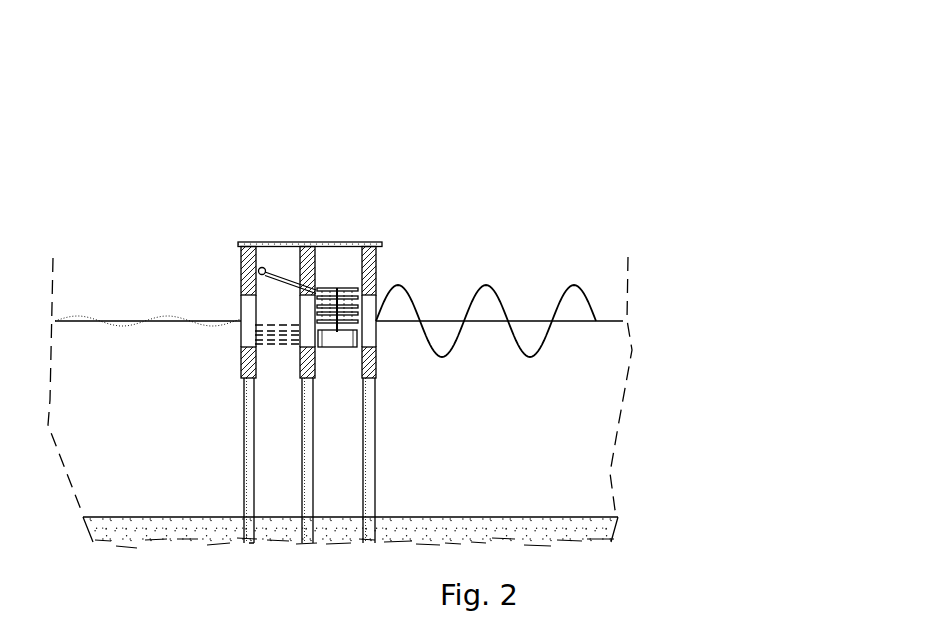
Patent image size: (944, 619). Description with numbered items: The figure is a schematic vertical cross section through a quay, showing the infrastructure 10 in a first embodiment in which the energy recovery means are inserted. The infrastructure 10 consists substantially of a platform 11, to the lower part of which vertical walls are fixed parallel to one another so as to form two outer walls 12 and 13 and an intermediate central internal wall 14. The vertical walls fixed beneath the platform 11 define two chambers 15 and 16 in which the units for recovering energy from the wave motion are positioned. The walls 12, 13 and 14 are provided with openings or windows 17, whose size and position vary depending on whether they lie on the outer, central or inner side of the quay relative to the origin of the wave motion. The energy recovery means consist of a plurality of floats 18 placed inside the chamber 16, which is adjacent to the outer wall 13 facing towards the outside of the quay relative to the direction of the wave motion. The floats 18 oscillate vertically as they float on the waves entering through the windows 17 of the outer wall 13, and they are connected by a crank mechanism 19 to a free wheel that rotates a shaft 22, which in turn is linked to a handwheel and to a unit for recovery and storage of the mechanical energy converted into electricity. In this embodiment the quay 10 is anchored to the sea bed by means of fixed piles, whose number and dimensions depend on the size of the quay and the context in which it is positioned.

The infrastructure 10 is at (157, 127).
The platform 11 is at (288, 243).
The outer wall 12 is at (241, 268).
The outer wall 13 is at (376, 263).
The intermediate central internal wall 14 is at (352, 330).
The chamber 15 is at (277, 305).
The chamber 16 is at (341, 262).
The openings or windows 17 is at (241, 307).
The floats 18 is at (373, 372).
The crank mechanism 19 is at (296, 286).
The shaft 22 is at (263, 268).